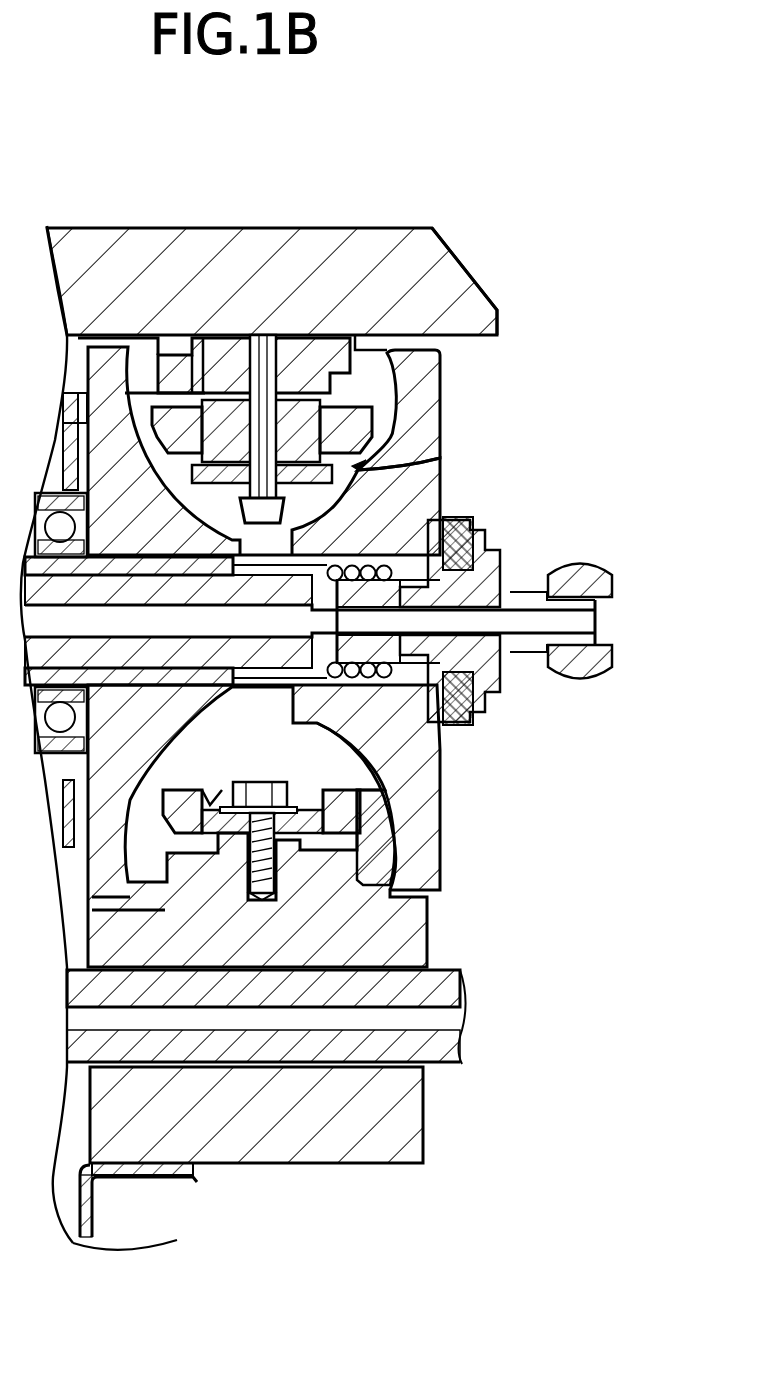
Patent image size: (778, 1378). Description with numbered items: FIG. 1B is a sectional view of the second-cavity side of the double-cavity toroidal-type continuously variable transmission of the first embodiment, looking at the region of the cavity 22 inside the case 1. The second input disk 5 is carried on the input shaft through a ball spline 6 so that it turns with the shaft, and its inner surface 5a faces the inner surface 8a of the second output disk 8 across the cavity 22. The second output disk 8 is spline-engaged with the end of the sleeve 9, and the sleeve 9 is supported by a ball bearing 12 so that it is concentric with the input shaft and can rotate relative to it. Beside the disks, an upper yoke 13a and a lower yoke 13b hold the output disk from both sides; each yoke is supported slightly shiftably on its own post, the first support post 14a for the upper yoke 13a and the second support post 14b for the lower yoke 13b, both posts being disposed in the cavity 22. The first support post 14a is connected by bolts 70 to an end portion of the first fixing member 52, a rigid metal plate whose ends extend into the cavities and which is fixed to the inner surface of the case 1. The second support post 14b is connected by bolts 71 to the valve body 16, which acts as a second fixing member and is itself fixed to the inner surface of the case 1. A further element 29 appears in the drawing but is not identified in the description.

The case 1 is at (480, 285).
The second input disk 5 is at (460, 263).
The inner surface of second input disk 5a is at (420, 363).
The ball spline 6 is at (370, 672).
The second output disk 8 is at (106, 360).
The inner surface of second output disk 8a is at (215, 370).
The sleeve 9 is at (207, 600).
The ball bearing 12 is at (84, 603).
The upper yoke 13a is at (378, 400).
The lower yoke 13b is at (390, 797).
The first support post 14a is at (300, 400).
The second support post 14b is at (383, 840).
The valve body 16 is at (190, 873).
The second cavity 22 is at (440, 463).
The retaining flange 29 is at (98, 357).
The first fixing member 52 is at (262, 360).
The bolt 70 is at (262, 515).
The bolt 71 is at (255, 790).